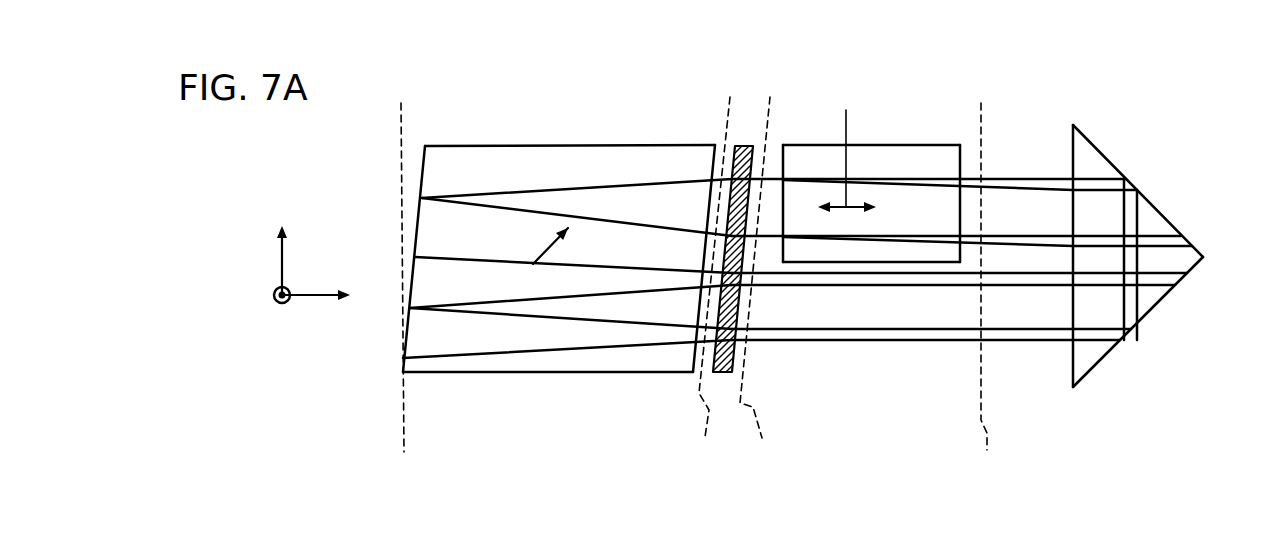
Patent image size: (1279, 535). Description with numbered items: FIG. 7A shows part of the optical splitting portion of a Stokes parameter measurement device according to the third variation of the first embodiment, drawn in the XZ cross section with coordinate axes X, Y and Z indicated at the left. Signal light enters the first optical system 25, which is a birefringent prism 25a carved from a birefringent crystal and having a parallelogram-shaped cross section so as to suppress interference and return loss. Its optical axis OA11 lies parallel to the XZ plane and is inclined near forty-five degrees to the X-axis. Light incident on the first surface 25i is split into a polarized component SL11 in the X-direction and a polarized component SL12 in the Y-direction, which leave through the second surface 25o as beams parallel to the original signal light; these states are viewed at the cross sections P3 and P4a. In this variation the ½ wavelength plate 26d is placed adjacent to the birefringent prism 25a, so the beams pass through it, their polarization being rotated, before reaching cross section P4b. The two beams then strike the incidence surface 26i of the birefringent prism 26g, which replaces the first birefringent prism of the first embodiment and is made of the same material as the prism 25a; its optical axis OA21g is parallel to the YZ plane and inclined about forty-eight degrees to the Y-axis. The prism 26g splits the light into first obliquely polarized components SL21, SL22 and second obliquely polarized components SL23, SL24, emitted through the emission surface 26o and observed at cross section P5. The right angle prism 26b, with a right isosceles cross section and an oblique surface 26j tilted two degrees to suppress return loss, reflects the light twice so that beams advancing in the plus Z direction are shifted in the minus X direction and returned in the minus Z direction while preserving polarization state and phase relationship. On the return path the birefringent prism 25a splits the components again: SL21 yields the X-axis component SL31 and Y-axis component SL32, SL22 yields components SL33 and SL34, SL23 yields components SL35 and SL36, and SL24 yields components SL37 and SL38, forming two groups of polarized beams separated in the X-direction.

The first optical system 25 is at (524, 386).
The first surface 25i is at (424, 146).
The second surface 25o is at (643, 372).
The birefringent prism 25a is at (693, 373).
The optical axis of the birefringent prism OA11 is at (548, 248).
The polarized component in the X-direction SL11 is at (619, 183).
The polarized component in the Y-direction SL12 is at (580, 217).
The polarized component in the X-axis direction SL31 is at (598, 325).
The polarized component in the Y-axis direction SL32 is at (557, 352).
The X-axis direction polarized component SL33 is at (440, 260).
The Y-axis direction polarized component SL34 is at (483, 303).
The X-axis direction polarized component SL35 is at (571, 370).
The Y-axis direction polarized component SL36 is at (567, 415).
The X-axis direction polarized component SL37 is at (573, 345).
The Y-axis direction polarized component SL38 is at (571, 387).
The ½ wavelength plate 26d is at (747, 145).
The birefringent prism 26g is at (797, 145).
The incidence surface 26i is at (783, 252).
The emission surface 26o is at (960, 167).
The optical axis of the birefringent prism 26g OA21g is at (851, 149).
The first obliquely polarized component SL21 is at (910, 186).
The second obliquely polarized component SL23 is at (952, 179).
The right angle prism 26b is at (1156, 208).
The oblique surface 26j is at (1073, 387).
The first obliquely polarized component SL22 is at (1058, 245).
The second obliquely polarized component SL24 is at (1052, 233).
The cross section P3 is at (410, 295).
The cross section P4a is at (710, 282).
The cross section P4b is at (764, 282).
The cross section P5 is at (990, 290).
The X-axis X is at (282, 249).
The Y-axis Y is at (273, 305).
The Z-axis Z is at (325, 298).